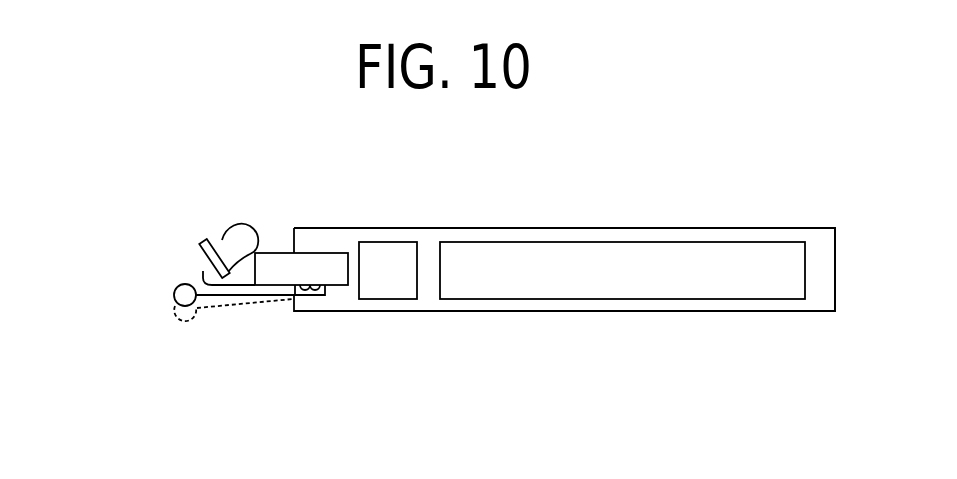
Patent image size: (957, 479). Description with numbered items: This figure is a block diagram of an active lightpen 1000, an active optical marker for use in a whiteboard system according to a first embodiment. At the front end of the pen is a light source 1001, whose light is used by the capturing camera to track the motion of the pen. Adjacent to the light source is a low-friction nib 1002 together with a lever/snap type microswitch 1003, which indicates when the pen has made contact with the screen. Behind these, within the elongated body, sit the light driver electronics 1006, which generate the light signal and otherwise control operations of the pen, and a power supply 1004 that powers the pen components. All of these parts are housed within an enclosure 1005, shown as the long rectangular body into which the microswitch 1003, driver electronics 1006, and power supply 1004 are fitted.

The lightpen 1000 is at (650, 136).
The light source 1001 is at (225, 252).
The low-friction nib 1002 is at (187, 297).
The lever/snap type microswitch 1003 is at (309, 282).
The power supply 1004 is at (628, 272).
The enclosure 1005 is at (600, 229).
The light driver electronics 1006 is at (384, 276).